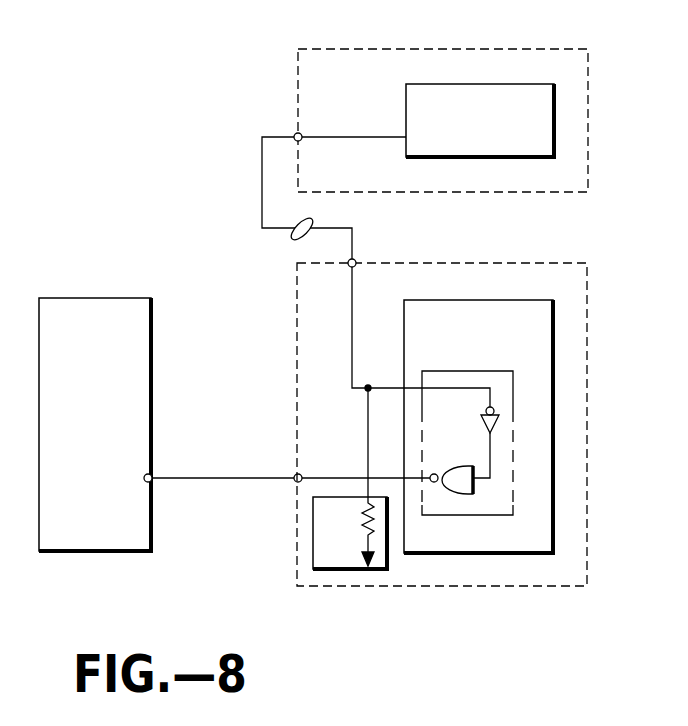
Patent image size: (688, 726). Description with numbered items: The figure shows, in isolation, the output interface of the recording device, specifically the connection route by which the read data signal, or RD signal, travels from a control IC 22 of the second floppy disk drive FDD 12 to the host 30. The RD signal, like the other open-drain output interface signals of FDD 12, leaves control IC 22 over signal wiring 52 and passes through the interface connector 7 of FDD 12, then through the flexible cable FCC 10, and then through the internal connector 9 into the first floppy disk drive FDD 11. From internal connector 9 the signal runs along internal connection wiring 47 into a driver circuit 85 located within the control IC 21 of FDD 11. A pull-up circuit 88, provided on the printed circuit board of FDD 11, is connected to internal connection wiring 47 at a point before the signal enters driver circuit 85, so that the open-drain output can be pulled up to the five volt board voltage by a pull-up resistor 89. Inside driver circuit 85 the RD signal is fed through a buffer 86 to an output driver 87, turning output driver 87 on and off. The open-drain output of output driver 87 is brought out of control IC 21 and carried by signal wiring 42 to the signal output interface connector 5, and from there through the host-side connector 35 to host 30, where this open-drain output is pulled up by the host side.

The signal interface connector 5 is at (296, 476).
The interface connector 7 is at (295, 134).
The internal connector 9 is at (349, 267).
The FCC 10 is at (292, 236).
The PCB 11 is at (565, 274).
The FDD 2 12 is at (543, 180).
The control IC 21 is at (516, 318).
The control IC 22 is at (437, 147).
The host 30 is at (102, 312).
The connector 35 is at (152, 482).
The signal wiring 42 is at (331, 476).
The internal connection wiring 47 is at (356, 290).
The signal line 52 is at (356, 135).
The driver circuit 85 is at (467, 378).
The buffer 86 is at (500, 424).
The output driver 87 is at (458, 496).
The pull-up circuit 88 is at (338, 570).
The pull-up resistor 89 is at (360, 525).